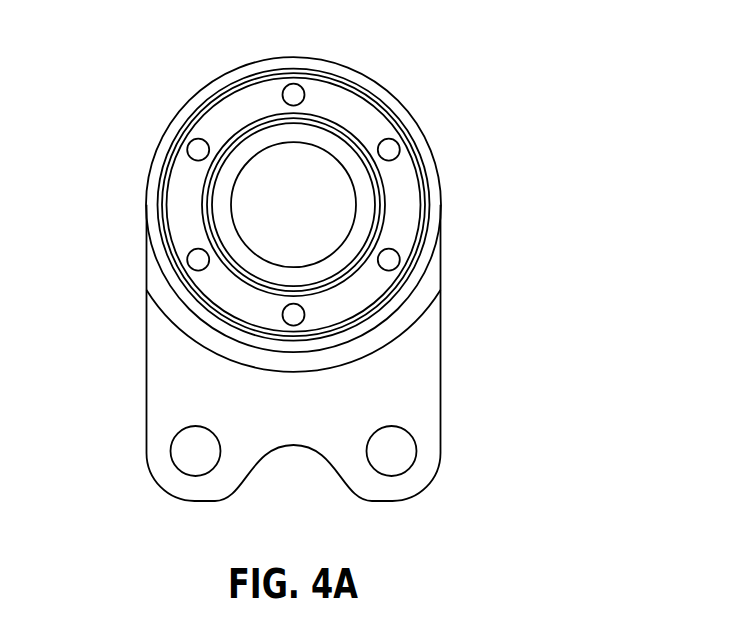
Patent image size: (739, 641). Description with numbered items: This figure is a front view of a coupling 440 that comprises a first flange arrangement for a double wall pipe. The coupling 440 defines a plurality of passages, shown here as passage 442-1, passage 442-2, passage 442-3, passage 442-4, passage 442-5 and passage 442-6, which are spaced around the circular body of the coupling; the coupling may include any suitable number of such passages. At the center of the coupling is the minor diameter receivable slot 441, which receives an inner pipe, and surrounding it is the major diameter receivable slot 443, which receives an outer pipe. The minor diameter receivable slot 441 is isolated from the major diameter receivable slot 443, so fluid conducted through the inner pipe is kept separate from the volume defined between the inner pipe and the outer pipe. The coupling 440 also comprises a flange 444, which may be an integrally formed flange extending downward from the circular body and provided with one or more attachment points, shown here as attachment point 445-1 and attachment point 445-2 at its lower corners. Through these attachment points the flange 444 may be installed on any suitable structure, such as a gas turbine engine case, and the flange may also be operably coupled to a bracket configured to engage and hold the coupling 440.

The coupling 440 is at (223, 75).
The minor diameter receivable slot 441 is at (402, 227).
The passage 442-1 is at (304, 92).
The passage 442-2 is at (397, 161).
The passage 442-3 is at (389, 272).
The passage 442-4 is at (282, 316).
The passage 442-5 is at (189, 252).
The passage 442-6 is at (189, 158).
The major diameter receivable slot 443 is at (353, 108).
The flange 444 is at (442, 398).
The attachment point 445-1 is at (405, 460).
The attachment point 445-2 is at (185, 460).